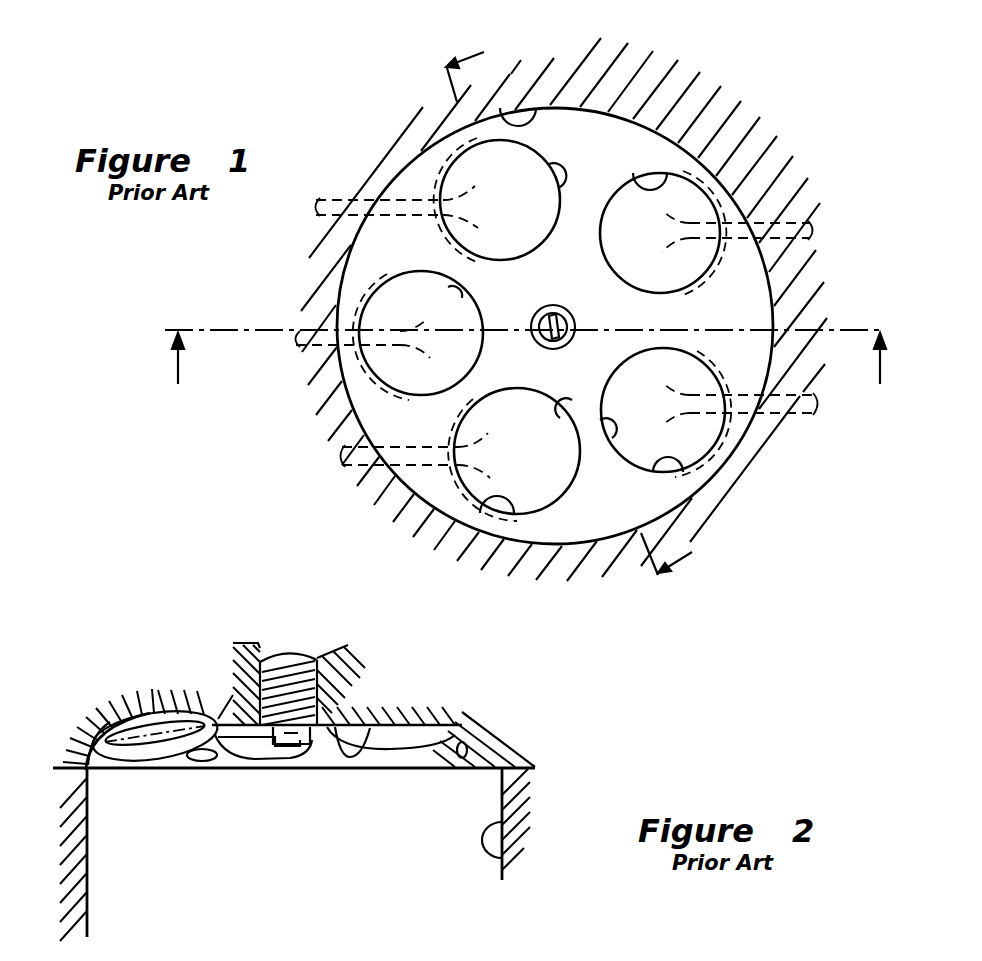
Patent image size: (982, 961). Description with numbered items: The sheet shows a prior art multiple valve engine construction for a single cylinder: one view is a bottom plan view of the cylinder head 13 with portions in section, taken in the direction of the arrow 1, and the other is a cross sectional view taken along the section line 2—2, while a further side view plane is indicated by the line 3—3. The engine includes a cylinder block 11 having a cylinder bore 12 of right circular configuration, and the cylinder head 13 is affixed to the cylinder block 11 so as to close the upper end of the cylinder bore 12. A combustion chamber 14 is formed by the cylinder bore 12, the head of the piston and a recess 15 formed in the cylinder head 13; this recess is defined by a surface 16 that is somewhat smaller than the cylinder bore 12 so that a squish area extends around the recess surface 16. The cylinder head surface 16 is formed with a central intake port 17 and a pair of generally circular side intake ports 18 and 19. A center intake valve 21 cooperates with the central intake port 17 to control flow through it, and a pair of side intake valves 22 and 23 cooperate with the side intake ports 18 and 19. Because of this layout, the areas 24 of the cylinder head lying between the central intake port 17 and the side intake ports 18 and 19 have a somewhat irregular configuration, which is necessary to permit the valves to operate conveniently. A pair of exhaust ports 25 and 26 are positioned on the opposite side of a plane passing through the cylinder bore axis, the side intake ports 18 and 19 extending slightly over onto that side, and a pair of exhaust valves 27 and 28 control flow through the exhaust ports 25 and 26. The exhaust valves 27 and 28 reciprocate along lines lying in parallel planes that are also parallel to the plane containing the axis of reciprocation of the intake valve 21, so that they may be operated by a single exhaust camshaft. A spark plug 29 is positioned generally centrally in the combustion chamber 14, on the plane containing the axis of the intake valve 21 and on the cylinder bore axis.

In FIG. 2, the arrow 1 is at (278, 820).
In FIG. 1, the section line 2— 2 is at (569, 327).
In FIG. 1, the section line 3— 3 is at (525, 357).
In FIG. 2, the cylinder block 11 is at (560, 810).
In FIG. 2, the cylinder bore 12 is at (505, 855).
In FIG. 1, the cylinder head 13 is at (825, 293).
In FIG. 2, the cylinder head 13 is at (520, 735).
In FIG. 2, the combustion chamber 14 is at (323, 758).
In FIG. 1, the recess 15 is at (579, 238).
In FIG. 2, the recess 15 is at (340, 727).
In FIG. 1, the surface 16 is at (530, 108).
In FIG. 2, the surface 16 is at (105, 705).
In FIG. 1, the central intake port 17 is at (470, 298).
In FIG. 1, the side intake port 18 is at (556, 178).
In FIG. 1, the side intake port 19 is at (562, 416).
In FIG. 1, the center intake valve 21 is at (292, 345).
In FIG. 2, the center intake valve 21 is at (236, 750).
In FIG. 1, the side intake valve 22 is at (322, 198).
In FIG. 2, the side intake valve 22 is at (150, 712).
In FIG. 1, the side intake valve 23 is at (350, 458).
In FIG. 2, the side intake valve 23 is at (400, 750).
In FIG. 1, the areas of the cylinder head 24 is at (428, 252).
In FIG. 1, the exhaust port 25 is at (703, 175).
In FIG. 1, the exhaust port 26 is at (667, 470).
In FIG. 1, the exhaust valve 27 is at (793, 216).
In FIG. 1, the exhaust valve 28 is at (797, 418).
In FIG. 1, the spark plug 29 is at (572, 318).
In FIG. 2, the spark plug 29 is at (300, 650).